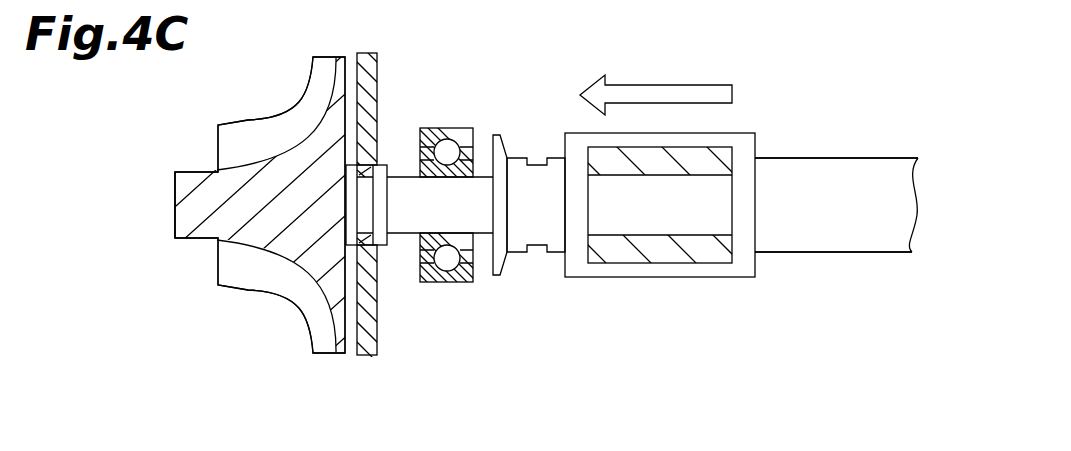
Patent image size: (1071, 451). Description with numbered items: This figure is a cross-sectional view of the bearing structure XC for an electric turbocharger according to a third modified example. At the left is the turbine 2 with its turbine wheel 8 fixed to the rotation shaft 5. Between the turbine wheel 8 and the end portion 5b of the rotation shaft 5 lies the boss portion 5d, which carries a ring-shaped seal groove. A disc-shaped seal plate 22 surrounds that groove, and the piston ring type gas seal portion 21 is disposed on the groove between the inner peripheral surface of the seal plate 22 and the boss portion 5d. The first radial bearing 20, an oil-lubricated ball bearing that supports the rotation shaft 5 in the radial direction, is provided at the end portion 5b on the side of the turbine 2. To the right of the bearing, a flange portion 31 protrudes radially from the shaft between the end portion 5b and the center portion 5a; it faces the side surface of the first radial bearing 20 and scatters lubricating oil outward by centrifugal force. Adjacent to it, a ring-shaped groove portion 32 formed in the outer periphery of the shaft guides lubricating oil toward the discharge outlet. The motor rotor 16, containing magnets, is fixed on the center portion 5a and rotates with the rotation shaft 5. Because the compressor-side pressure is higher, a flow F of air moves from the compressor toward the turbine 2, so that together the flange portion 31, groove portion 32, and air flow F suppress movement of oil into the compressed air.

The turbine 2 is at (191, 308).
The turbine wheel 8 is at (263, 282).
The boss portion 5d is at (308, 266).
The seal plate 22 is at (378, 83).
The gas seal portion 21 is at (380, 250).
The end portion 5b is at (405, 190).
The first radial bearing 20 is at (456, 285).
The flange portion 31 is at (510, 137).
The groove portion 32 is at (535, 160).
The motor rotor 16 is at (660, 265).
The center portion 5a is at (820, 178).
The rotation shaft 5 is at (810, 254).
The flow of air F is at (665, 85).
The bearing structure XC is at (521, 323).